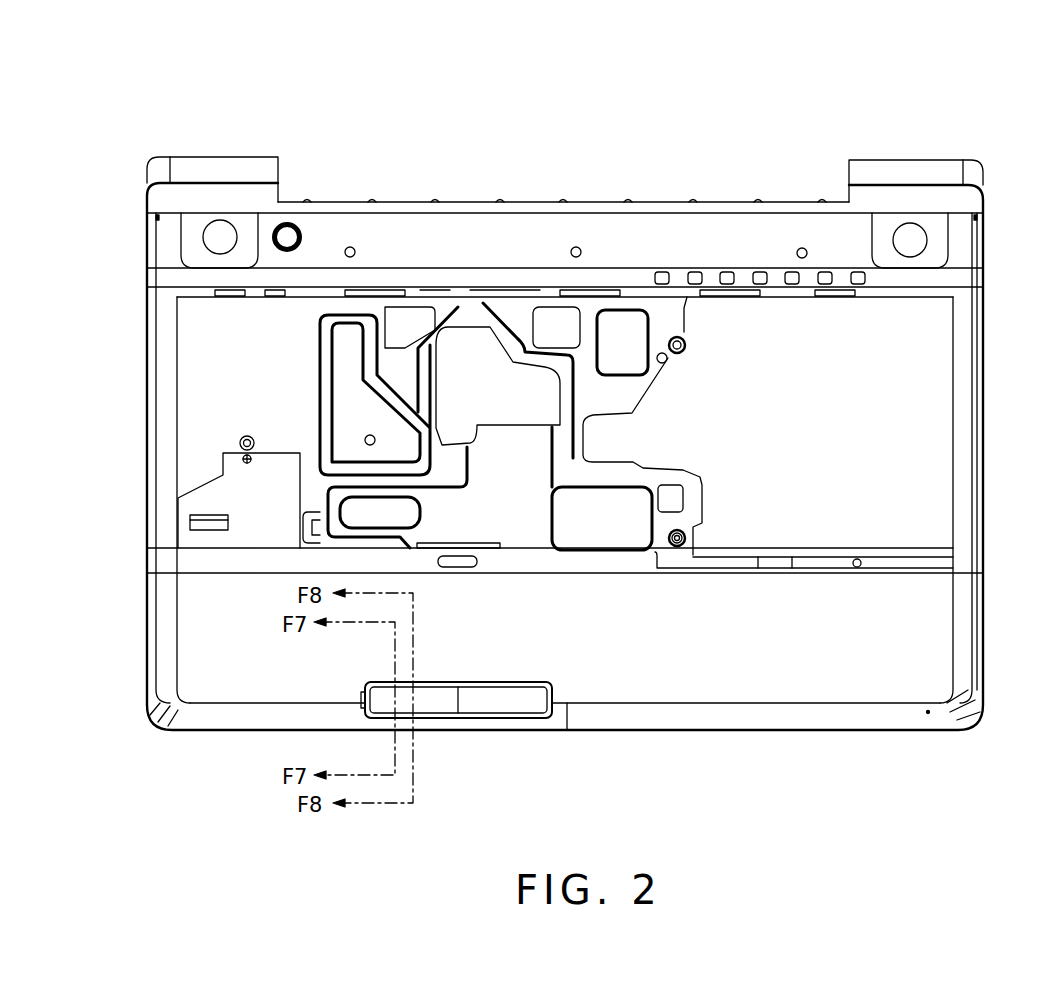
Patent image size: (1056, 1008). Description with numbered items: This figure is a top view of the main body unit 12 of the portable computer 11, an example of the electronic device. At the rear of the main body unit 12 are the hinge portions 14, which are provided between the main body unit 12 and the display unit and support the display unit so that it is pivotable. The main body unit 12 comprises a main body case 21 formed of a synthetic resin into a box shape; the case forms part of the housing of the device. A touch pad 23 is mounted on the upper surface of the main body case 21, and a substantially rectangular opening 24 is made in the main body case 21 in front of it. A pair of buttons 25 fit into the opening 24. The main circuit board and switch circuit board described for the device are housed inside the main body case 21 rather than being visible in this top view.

The portable computer 11 is at (822, 87).
The main body unit 12 is at (132, 433).
The hinge portion 14 is at (282, 173).
The main body case 21 is at (933, 615).
The touch pad 23 is at (520, 633).
The opening 24 is at (555, 693).
The buttons 25 is at (435, 700).